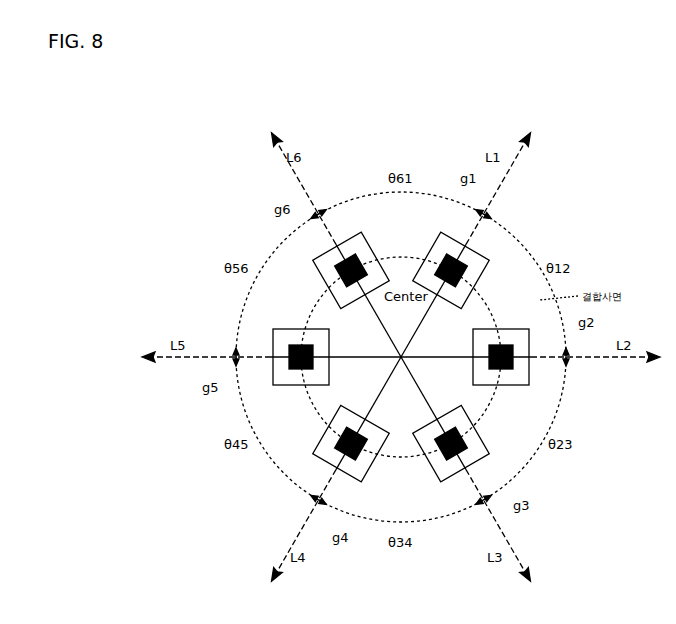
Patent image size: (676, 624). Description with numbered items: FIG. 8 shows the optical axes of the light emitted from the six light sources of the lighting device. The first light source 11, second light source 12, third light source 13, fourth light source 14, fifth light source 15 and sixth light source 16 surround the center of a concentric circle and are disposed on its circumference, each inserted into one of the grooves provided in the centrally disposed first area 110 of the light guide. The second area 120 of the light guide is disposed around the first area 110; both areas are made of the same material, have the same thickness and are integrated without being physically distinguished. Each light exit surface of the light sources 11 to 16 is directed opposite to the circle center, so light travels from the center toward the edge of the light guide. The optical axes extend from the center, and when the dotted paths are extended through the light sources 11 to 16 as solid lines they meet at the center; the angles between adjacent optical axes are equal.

The first light source 11 is at (490, 244).
The second light source 12 is at (530, 380).
The third light source 13 is at (451, 479).
The fourth light source 14 is at (328, 467).
The fifth light source 15 is at (272, 336).
The sixth light source 16 is at (343, 248).
The first area 110 is at (477, 314).
The second area 120 is at (555, 243).